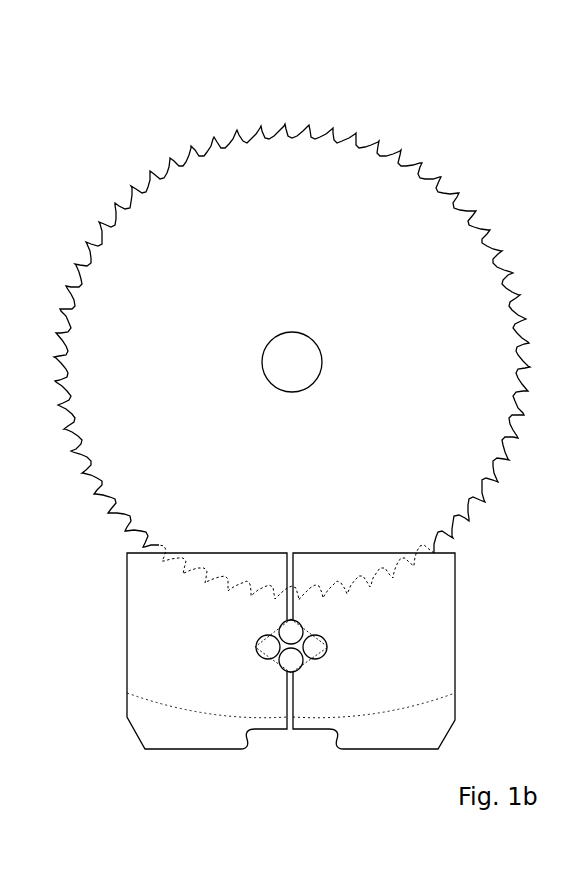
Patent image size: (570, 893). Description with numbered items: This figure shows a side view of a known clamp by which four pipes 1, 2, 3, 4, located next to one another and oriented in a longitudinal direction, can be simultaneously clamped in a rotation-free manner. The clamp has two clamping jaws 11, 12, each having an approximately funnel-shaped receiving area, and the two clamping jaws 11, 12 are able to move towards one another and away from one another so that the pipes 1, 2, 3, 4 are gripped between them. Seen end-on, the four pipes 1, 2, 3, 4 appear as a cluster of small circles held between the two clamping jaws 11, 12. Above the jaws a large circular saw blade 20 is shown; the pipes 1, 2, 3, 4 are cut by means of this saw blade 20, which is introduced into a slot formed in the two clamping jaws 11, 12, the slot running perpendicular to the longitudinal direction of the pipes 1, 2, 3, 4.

The saw blade 20 is at (318, 180).
The clamping jaw 11 is at (418, 663).
The clamping jaw 12 is at (150, 655).
The pipe 1 is at (315, 647).
The pipe 2 is at (290, 660).
The pipe 3 is at (290, 632).
The pipe 4 is at (268, 647).